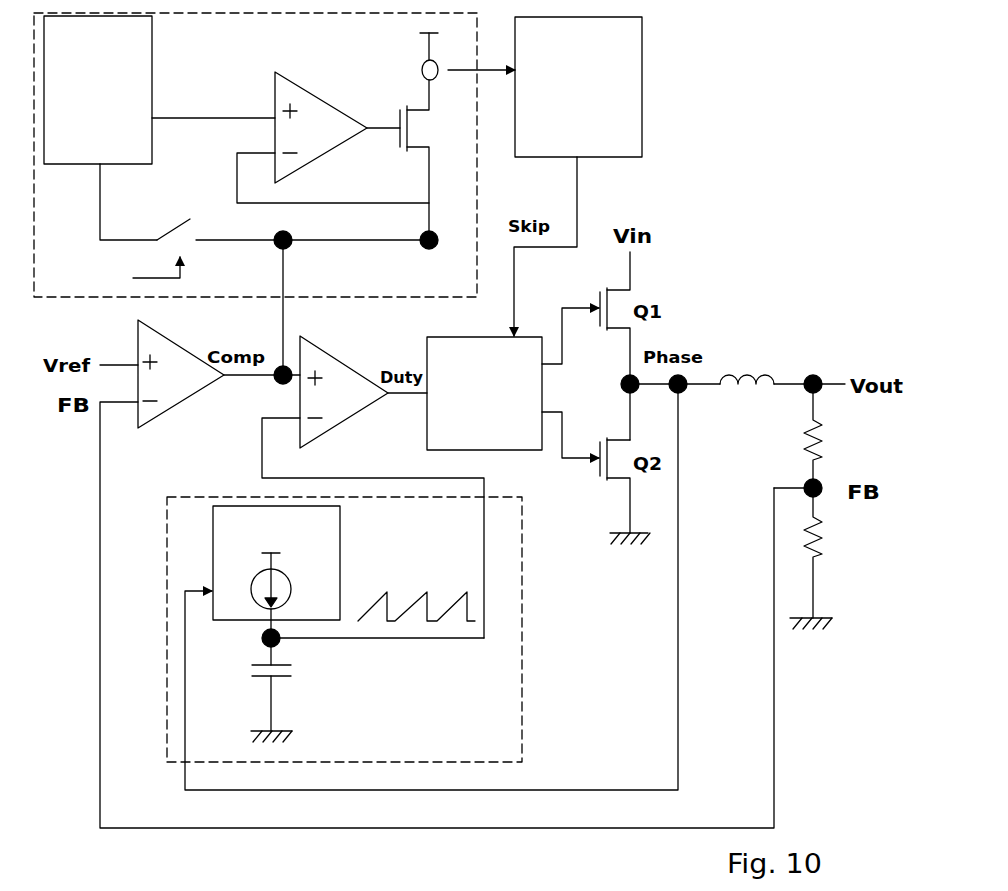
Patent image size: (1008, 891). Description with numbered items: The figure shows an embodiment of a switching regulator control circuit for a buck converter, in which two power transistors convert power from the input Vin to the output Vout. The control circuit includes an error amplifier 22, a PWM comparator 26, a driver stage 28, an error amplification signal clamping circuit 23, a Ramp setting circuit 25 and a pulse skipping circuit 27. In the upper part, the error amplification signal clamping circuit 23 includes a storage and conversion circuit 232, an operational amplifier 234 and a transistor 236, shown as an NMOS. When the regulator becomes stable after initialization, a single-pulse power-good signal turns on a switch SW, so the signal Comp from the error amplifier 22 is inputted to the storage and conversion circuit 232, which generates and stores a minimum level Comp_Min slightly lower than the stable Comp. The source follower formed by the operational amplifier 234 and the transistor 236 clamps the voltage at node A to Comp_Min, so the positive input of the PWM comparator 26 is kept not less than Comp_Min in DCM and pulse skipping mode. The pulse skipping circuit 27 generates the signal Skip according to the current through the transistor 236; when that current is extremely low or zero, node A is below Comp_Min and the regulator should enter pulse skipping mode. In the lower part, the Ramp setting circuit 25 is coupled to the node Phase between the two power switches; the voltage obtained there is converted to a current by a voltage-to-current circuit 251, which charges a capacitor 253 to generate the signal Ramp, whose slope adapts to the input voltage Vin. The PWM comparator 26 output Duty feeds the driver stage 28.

The error amplifier 22 is at (178, 406).
The error amplification signal clamping circuit 23 is at (437, 284).
The Ramp setting circuit 25 is at (522, 680).
The PWM comparator 26 is at (343, 366).
The pulse skipping circuit 27 is at (566, 144).
The driver stage 28 is at (473, 440).
The storage and conversion circuit 232 is at (80, 156).
The operational amplifier 234 is at (323, 98).
The transistor 236 is at (436, 136).
The voltage-to-current circuit 251 is at (340, 553).
The capacitor 253 is at (297, 671).